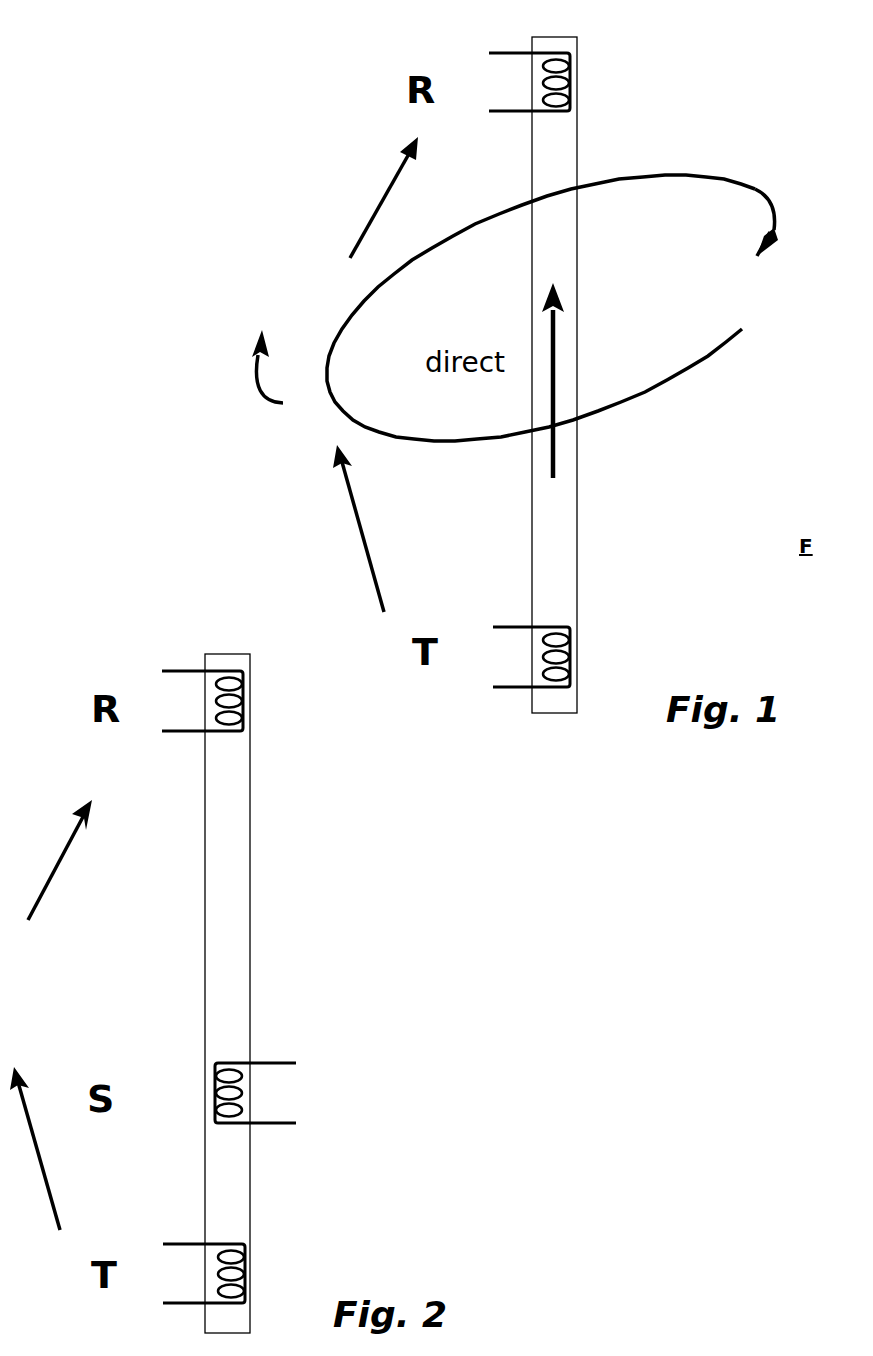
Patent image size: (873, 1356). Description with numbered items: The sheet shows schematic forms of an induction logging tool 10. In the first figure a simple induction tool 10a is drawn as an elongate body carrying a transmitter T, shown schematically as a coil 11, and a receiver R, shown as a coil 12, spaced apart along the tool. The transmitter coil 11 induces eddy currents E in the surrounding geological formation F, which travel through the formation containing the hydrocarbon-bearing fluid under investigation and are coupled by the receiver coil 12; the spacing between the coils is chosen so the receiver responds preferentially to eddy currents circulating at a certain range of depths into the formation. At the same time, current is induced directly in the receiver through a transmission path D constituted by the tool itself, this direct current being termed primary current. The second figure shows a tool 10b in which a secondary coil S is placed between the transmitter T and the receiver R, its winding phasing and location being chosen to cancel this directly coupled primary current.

In FIG. 2, the induction tool 10 is at (250, 1264).
In FIG. 1, the induction tool 10a is at (560, 562).
In FIG. 2, the tool 10b is at (230, 948).
In FIG. 1, the coil 11 is at (553, 707).
In FIG. 2, the coil 11 is at (240, 698).
In FIG. 1, the coil 12 is at (570, 92).
In FIG. 1, the transmission path D is at (554, 365).
In FIG. 1, the eddy currents E is at (702, 360).